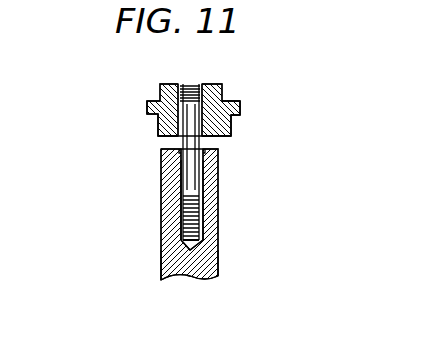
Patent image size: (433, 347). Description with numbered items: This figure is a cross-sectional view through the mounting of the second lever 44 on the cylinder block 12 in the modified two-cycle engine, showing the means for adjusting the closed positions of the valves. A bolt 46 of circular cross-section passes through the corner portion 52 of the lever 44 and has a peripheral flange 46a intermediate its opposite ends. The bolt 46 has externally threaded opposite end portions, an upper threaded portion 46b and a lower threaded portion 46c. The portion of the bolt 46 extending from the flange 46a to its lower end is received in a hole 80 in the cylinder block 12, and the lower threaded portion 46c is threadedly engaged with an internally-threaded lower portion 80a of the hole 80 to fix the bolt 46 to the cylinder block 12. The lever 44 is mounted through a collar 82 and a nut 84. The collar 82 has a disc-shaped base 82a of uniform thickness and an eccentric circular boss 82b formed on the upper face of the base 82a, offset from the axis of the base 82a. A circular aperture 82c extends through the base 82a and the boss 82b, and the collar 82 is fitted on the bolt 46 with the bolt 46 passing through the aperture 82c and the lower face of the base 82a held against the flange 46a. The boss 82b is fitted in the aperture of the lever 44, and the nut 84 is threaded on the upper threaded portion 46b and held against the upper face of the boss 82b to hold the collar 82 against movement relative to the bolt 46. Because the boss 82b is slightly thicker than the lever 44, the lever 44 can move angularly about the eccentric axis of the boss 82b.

The cylinder block 12 is at (219, 243).
The second lever 44 is at (241, 101).
The bolt 46 is at (161, 185).
The peripheral flange 46a is at (165, 152).
The upper threaded portion 46b is at (216, 90).
The lower threaded portion 46c is at (181, 211).
The corner portion 52 is at (232, 102).
The hole 80 is at (219, 195).
The internally-threaded lower portion 80a is at (181, 238).
The collar 82 is at (146, 123).
The disc-shaped base 82a is at (232, 136).
The eccentric circular boss 82b is at (237, 117).
The circular aperture 82c is at (162, 149).
The nut 84 is at (223, 97).